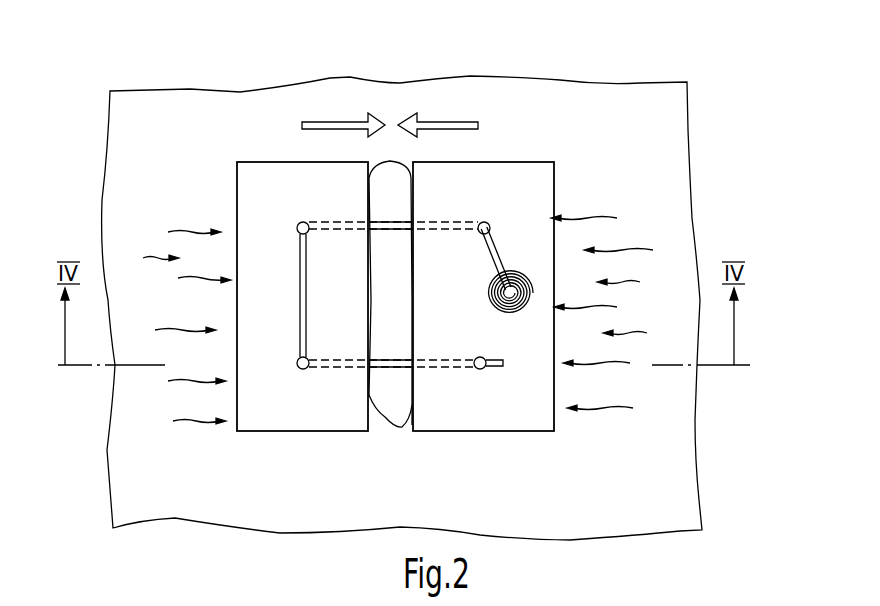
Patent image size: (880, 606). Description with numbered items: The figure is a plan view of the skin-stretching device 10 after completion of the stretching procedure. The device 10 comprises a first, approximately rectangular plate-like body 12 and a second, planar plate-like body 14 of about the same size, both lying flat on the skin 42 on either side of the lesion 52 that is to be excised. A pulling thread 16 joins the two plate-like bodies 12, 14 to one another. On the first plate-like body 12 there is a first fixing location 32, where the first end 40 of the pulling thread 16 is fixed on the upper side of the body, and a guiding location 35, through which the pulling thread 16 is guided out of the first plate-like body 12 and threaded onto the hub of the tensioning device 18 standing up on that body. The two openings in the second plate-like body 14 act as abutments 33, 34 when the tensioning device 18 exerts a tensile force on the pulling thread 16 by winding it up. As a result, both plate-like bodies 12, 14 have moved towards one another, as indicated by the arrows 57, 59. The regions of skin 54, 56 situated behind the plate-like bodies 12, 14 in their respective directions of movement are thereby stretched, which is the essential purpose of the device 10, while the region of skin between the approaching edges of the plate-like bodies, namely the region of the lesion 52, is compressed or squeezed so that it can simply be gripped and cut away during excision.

The device 10 is at (590, 131).
The first plate-like body 12 is at (497, 175).
The second plate-like body 14 is at (263, 180).
The pulling thread 16 is at (333, 370).
The tensioning device 18 is at (498, 306).
The first fixing location 32 is at (484, 371).
The abutment 33 is at (300, 370).
The abutment 34 is at (297, 226).
The guiding location 35 is at (489, 223).
The first end of the pulling thread 40 is at (499, 360).
The skin 42 is at (622, 505).
The lesion 52 is at (388, 400).
The region of skin 54 is at (623, 250).
The region of skin 56 is at (187, 223).
The arrow 57 is at (333, 121).
The arrow 59 is at (442, 121).